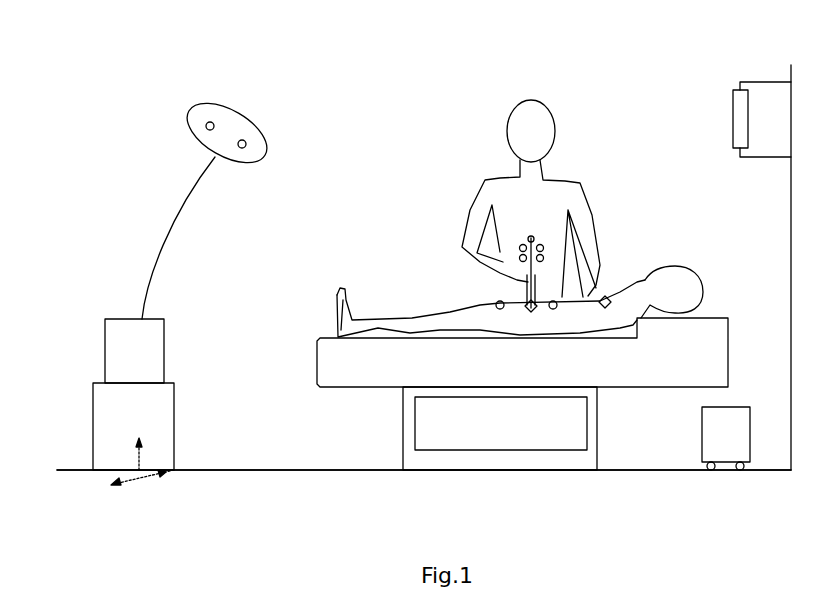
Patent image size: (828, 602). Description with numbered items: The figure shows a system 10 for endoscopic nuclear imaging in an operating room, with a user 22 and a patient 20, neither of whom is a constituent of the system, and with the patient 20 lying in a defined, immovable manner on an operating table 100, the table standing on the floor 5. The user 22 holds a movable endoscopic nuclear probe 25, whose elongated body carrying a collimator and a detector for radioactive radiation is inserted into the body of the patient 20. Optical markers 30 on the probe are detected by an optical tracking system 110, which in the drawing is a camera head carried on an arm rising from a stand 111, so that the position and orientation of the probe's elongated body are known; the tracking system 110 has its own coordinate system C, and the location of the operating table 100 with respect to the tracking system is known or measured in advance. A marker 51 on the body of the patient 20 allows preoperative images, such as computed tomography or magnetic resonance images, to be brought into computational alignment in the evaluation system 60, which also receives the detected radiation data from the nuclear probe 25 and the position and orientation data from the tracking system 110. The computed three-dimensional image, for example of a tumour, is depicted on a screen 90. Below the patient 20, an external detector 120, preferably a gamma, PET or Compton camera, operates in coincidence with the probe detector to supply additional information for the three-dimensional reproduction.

The system for endoscopic nuclear imaging 10 is at (85, 36).
The floor 5 is at (233, 472).
The optical tracking system 110 is at (241, 114).
The camera stand base 111 is at (93, 398).
The coordinate system C is at (165, 467).
The patient 20 is at (336, 292).
The user 22 is at (552, 178).
The optical markers 30 is at (534, 240).
The movable endoscopic nuclear probe 25 is at (533, 303).
The marker 51 is at (608, 299).
The operating table 100 is at (720, 340).
The external detector 120 is at (477, 442).
The screen 90 is at (737, 105).
The evaluation system 60 is at (733, 420).